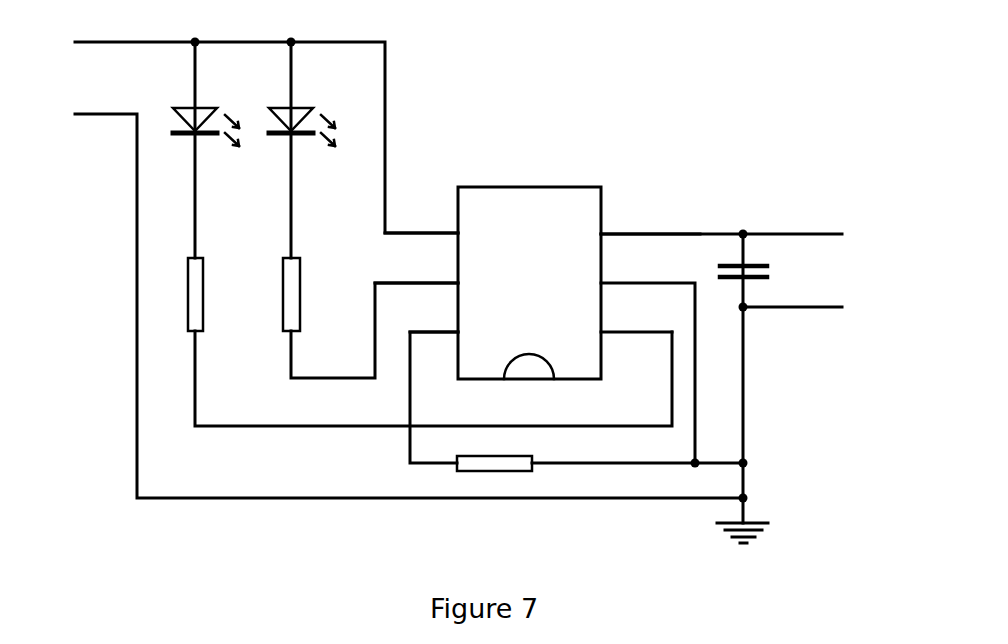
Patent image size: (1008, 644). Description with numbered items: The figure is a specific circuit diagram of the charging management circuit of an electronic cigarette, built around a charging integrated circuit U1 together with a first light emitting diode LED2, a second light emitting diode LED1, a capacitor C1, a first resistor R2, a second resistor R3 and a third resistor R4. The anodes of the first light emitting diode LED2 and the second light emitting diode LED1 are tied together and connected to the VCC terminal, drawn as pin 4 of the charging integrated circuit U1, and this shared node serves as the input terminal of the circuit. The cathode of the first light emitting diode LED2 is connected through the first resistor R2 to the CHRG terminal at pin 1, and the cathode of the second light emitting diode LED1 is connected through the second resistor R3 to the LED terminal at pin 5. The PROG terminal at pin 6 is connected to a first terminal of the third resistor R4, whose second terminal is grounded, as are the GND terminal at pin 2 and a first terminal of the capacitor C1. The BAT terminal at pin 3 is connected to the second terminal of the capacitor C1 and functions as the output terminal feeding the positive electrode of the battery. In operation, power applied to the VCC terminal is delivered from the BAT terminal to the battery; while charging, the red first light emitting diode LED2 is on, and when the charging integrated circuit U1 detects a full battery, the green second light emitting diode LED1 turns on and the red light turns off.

The charging integrated circuit U1 is at (529, 271).
The second light emitting diode LED1 is at (316, 150).
The first light emitting diode LED2 is at (217, 150).
The first resistor R2 is at (430, 342).
The second resistor R3 is at (370, 318).
The third resistor R4 is at (576, 401).
The capacitor C1 is at (731, 263).
The CHRG pin 1 is at (636, 321).
The GND pin 2 is at (648, 363).
The BAT pin 3 is at (650, 224).
The VCC pin 4 is at (421, 224).
The LED pin 5 is at (416, 272).
The PROG pin 6 is at (434, 320).